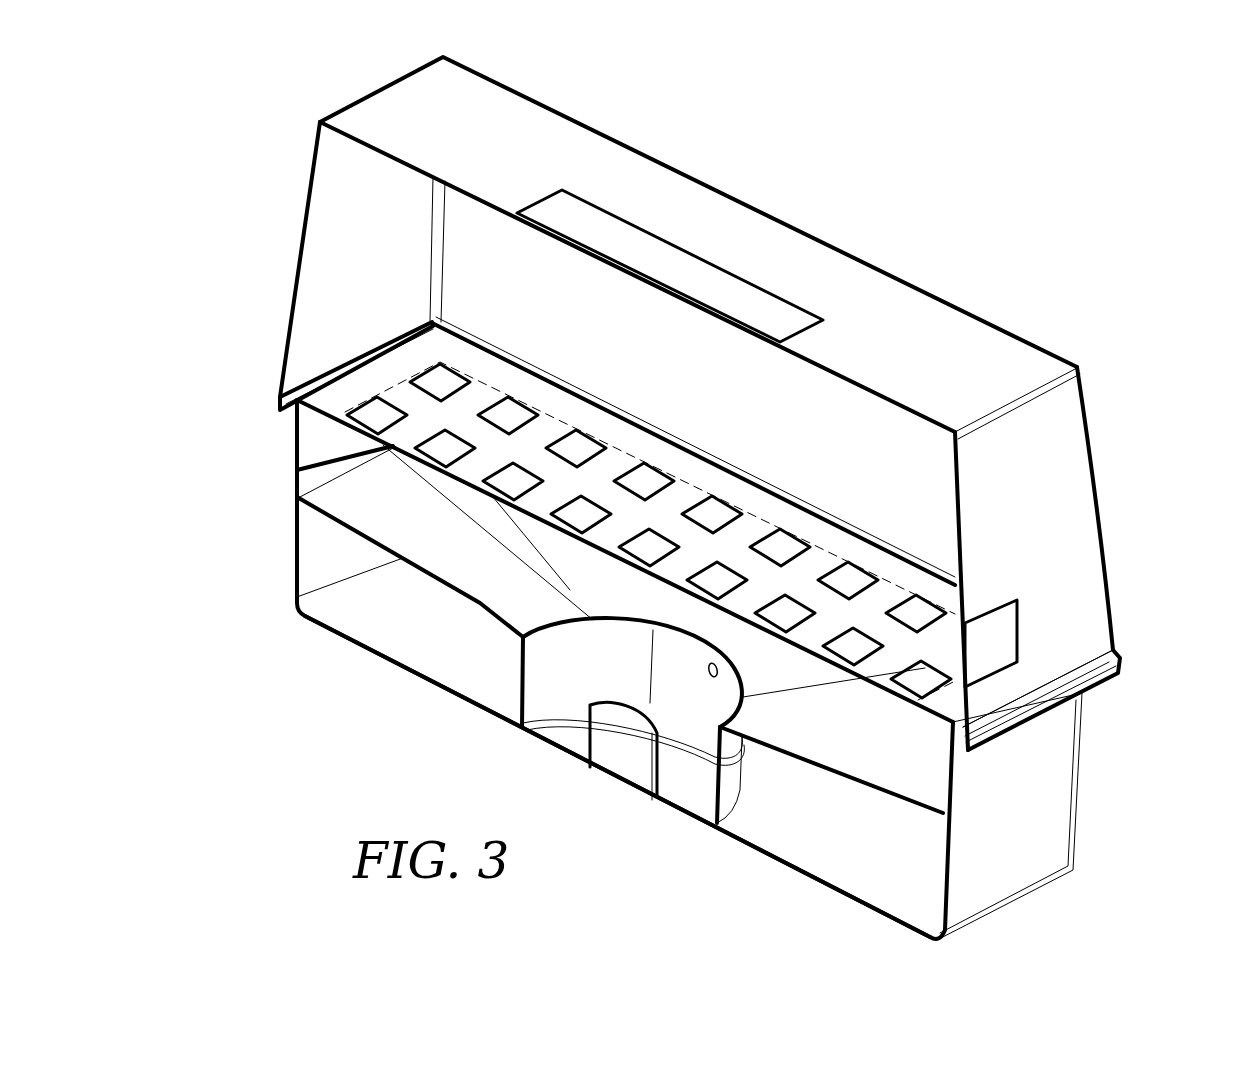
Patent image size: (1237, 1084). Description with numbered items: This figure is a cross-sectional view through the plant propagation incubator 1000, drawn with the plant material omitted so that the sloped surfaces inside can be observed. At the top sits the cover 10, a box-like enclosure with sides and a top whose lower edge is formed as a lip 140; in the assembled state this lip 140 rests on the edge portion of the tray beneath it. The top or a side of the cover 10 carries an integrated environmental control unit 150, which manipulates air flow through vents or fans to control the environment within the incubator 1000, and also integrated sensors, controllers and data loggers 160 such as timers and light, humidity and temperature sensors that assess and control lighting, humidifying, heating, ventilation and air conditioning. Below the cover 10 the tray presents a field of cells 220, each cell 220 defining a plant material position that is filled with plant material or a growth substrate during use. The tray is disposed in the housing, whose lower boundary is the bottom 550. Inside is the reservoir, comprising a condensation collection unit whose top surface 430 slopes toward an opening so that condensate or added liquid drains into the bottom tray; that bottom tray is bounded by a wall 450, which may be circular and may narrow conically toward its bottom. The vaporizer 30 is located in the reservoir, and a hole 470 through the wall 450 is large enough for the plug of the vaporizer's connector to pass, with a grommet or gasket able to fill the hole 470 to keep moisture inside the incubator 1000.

The incubator 1000 is at (1050, 84).
The cover 10 is at (1125, 482).
The environmental control unit 150 is at (655, 262).
The sensors/controllers/data loggers 160 is at (1003, 627).
The lip 140 is at (1107, 670).
The cell 220 is at (380, 414).
The top surface 430 is at (380, 515).
The bottom 550 is at (392, 637).
The wall 450 is at (543, 680).
The vaporizer 30 is at (590, 741).
The hole 470 is at (713, 684).